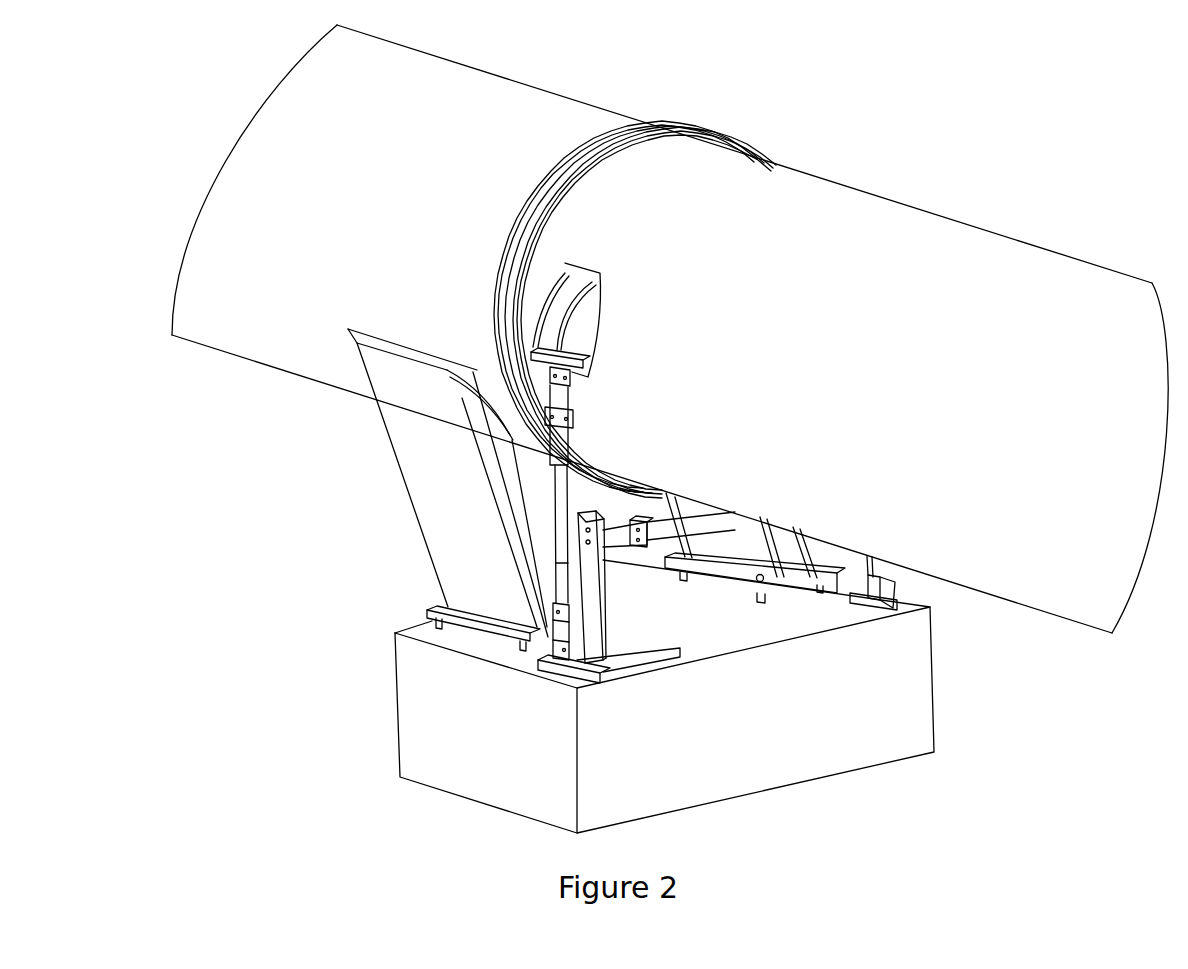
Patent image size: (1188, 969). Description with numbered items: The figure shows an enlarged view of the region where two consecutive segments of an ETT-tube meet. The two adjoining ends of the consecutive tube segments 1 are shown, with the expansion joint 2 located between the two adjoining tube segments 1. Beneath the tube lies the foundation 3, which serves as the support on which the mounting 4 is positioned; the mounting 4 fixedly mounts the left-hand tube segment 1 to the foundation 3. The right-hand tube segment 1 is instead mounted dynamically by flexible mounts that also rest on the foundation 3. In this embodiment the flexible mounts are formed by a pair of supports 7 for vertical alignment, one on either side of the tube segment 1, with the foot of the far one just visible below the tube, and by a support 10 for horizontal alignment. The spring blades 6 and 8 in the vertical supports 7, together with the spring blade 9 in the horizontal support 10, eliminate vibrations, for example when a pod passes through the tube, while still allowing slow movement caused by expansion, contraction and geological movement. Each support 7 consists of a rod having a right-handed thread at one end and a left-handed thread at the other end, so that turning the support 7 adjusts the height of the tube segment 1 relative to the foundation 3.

The tube segment 1 is at (242, 355).
The expansion joint 2 is at (730, 124).
The foundation 3 is at (934, 710).
The mounting 4 is at (457, 550).
The spring blade 6 is at (548, 400).
The support for vertical alignment 7 is at (556, 510).
The spring blade 8 is at (557, 635).
The spring blade 9 is at (613, 557).
The support for horizontal alignment 10 is at (667, 493).